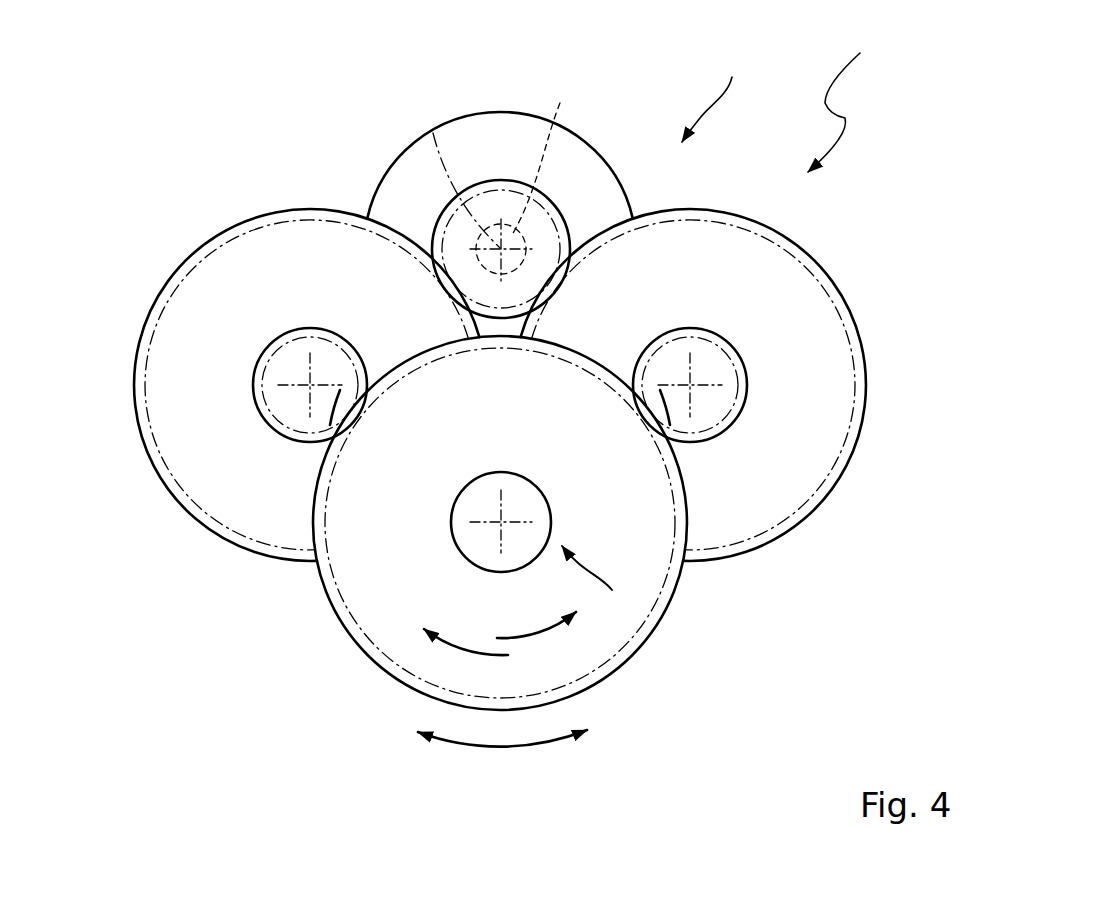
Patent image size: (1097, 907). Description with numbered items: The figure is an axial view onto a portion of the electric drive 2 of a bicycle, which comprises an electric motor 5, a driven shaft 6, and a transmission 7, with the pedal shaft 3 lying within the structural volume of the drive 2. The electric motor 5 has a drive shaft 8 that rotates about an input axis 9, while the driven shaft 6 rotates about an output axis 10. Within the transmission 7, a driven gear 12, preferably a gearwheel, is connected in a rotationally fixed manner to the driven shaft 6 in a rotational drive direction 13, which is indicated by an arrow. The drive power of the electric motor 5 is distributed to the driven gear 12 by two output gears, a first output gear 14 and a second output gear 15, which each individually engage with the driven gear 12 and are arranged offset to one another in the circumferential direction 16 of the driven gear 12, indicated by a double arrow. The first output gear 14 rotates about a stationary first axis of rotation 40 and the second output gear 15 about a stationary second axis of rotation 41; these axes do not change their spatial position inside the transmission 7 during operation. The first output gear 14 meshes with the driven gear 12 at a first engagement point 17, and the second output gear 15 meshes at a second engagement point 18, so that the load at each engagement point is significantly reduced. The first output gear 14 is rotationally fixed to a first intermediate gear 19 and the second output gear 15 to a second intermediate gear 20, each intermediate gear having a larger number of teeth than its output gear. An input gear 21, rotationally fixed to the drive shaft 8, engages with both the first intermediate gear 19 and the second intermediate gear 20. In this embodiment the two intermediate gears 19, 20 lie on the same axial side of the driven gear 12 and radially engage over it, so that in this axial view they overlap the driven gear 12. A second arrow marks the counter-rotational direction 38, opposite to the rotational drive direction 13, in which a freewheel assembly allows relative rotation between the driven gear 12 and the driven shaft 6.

The electric drive 2 is at (842, 98).
The pedal shaft 3 is at (595, 575).
The electric motor 5 is at (503, 122).
The driven shaft 6 is at (478, 490).
The transmission 7 is at (712, 93).
The drive shaft 8 is at (502, 196).
The input axis 9 is at (433, 133).
The output axis 10 is at (502, 522).
The driven gear 12 is at (658, 620).
The rotational drive direction 13 is at (457, 647).
The first output gear 14 is at (323, 333).
The second output gear 15 is at (680, 335).
The circumferential direction 16 is at (500, 750).
The first engagement point 17 is at (355, 413).
The second engagement point 18 is at (647, 417).
The first intermediate gear 19 is at (135, 372).
The second intermediate gear 20 is at (866, 372).
The input gear 21 is at (553, 218).
The counter-rotational direction 38 is at (537, 630).
The first axis of rotation 40 is at (308, 383).
The second axis of rotation 41 is at (692, 383).